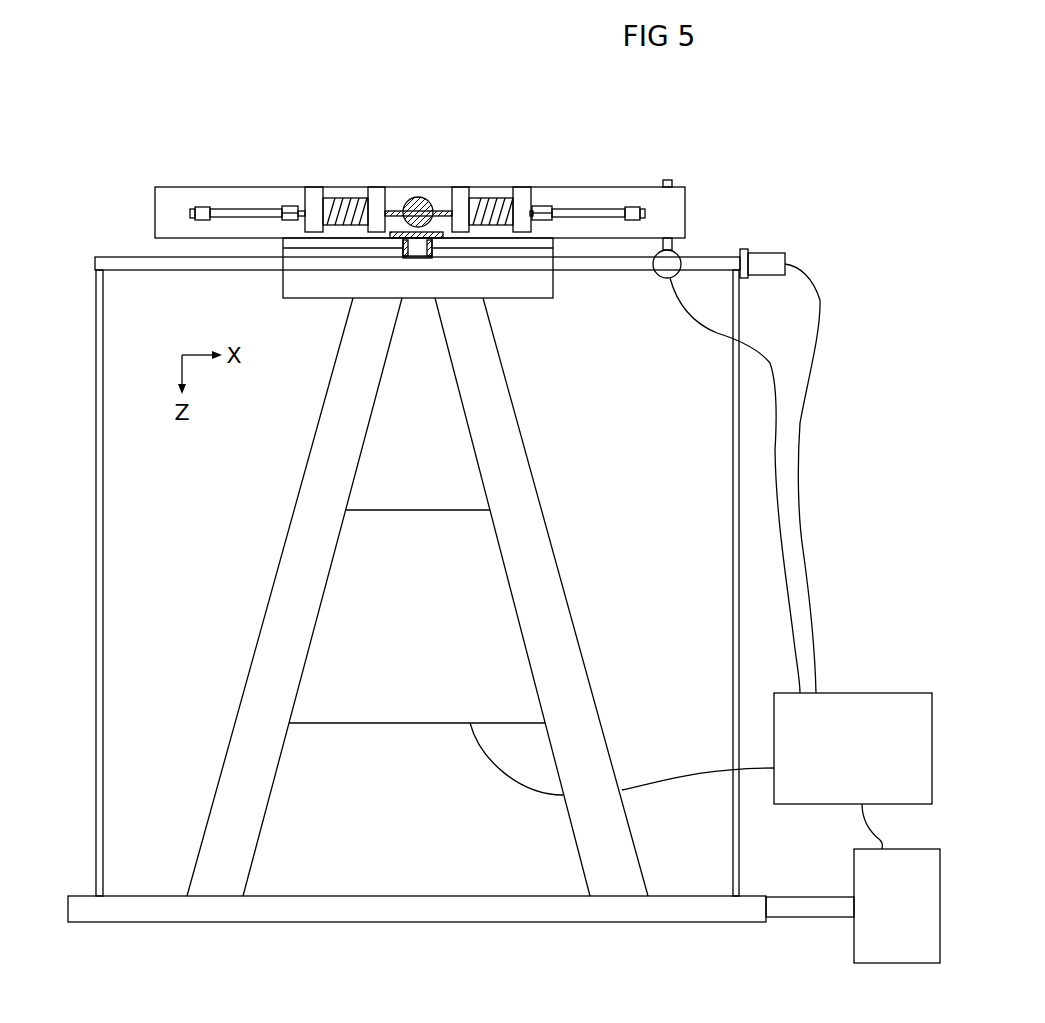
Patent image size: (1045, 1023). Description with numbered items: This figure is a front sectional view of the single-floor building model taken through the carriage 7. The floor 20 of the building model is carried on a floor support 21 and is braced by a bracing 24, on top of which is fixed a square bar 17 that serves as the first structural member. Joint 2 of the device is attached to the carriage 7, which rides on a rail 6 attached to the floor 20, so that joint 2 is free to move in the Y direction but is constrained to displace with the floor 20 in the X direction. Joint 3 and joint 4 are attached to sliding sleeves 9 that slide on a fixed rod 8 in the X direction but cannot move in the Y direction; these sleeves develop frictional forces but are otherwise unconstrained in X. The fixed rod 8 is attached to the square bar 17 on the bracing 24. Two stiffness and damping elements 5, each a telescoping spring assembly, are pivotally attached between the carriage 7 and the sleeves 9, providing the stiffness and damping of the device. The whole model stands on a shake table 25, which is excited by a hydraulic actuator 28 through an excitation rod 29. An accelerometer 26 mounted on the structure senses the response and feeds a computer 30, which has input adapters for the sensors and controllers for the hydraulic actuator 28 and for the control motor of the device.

The joint # 2 is at (410, 182).
The joint # 3 is at (540, 166).
The joint # 4 is at (297, 166).
The stiffness and damping element 5 is at (345, 198).
The rail 6 is at (395, 251).
The carriage on rail 7 is at (433, 242).
The fixed rod 8 is at (590, 206).
The sliding sleeve 9 is at (290, 204).
The bar fixed to bracing 17 is at (223, 187).
The floor 20 is at (598, 271).
The floor support 21 is at (735, 473).
The bracing 24 is at (545, 640).
The shake table 25 is at (472, 896).
The accelerometer 26 is at (781, 252).
The hydraulic actuator 28 is at (883, 918).
The excitation rod 29 is at (822, 918).
The computer 30 is at (839, 785).